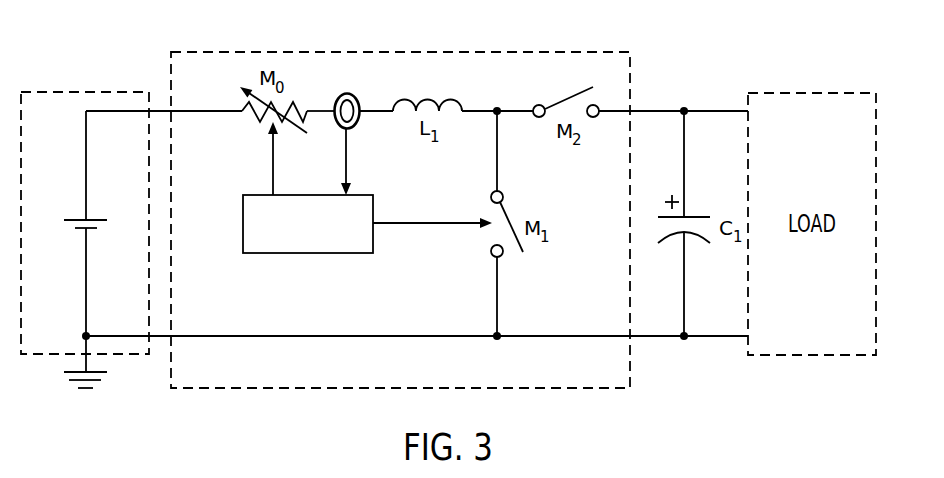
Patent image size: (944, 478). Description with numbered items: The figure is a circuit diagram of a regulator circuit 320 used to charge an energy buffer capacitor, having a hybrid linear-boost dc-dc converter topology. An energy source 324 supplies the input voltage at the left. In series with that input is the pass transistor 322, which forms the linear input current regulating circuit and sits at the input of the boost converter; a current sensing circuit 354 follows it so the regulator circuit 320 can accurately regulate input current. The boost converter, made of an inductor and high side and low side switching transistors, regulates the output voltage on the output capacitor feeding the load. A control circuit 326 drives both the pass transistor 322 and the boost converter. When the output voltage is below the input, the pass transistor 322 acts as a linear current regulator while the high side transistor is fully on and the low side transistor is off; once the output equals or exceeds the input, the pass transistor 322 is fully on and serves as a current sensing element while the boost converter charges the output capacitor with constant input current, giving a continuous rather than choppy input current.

The regulator circuit 320 is at (407, 52).
The pass transistor 322 is at (248, 113).
The energy source 324 is at (86, 91).
The control circuit 326 is at (308, 254).
The current sensing circuit 354 is at (345, 94).